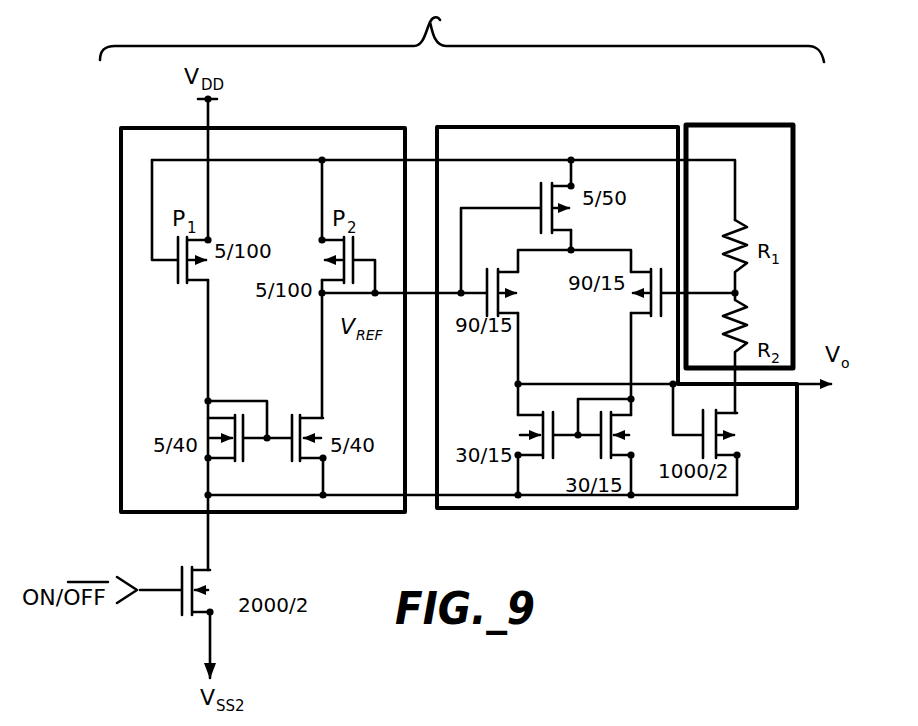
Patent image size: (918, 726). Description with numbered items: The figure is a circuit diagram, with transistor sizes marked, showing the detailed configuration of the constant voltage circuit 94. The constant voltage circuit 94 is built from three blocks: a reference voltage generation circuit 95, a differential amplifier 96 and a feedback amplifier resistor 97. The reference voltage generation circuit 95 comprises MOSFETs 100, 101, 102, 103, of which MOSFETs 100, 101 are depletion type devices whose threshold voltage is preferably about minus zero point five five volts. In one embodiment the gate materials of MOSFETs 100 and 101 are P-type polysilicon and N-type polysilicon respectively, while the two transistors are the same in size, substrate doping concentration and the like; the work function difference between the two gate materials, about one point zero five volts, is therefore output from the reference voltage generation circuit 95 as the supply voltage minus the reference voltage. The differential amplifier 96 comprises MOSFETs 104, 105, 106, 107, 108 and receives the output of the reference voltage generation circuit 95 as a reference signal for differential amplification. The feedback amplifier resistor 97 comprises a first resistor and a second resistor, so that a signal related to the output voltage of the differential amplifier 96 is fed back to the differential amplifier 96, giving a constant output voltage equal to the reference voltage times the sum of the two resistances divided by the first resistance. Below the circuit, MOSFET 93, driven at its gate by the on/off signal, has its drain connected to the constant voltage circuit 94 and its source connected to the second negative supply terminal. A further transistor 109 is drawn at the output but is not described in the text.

The MOSFET 93 is at (213, 571).
The constant voltage circuit 94 is at (462, 31).
The reference voltage generation circuit 95 is at (298, 508).
The differential amplifier 96 is at (576, 505).
The feedback amplifier resistor 97 is at (786, 183).
The MOSFET 100 is at (201, 284).
The MOSFET 101 is at (321, 239).
The MOSFET 102 is at (218, 418).
The MOSFET 103 is at (322, 424).
The MOSFET 104 is at (562, 225).
The MOSFET 105 is at (508, 237).
The MOSFET 106 is at (633, 310).
The MOSFET 107 is at (535, 416).
The MOSFET 108 is at (622, 412).
The N-channel output transistor 109 is at (728, 418).